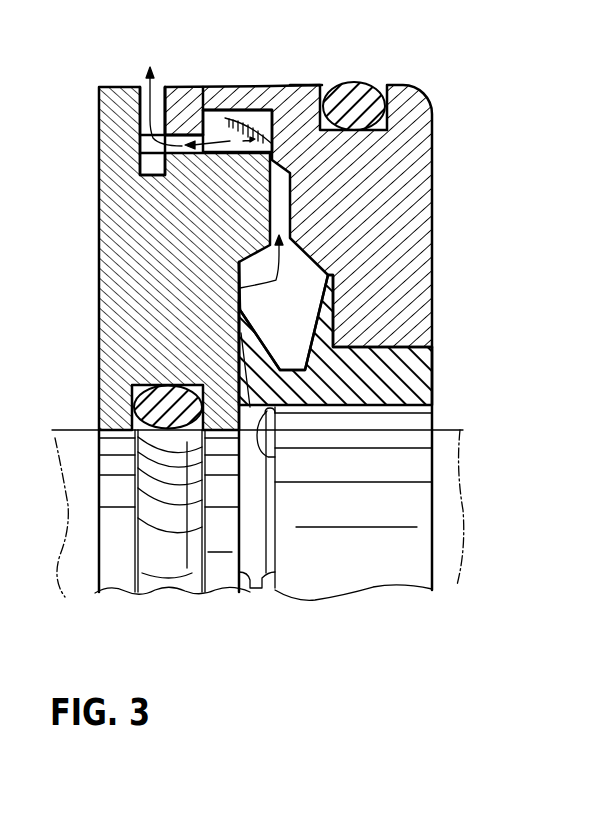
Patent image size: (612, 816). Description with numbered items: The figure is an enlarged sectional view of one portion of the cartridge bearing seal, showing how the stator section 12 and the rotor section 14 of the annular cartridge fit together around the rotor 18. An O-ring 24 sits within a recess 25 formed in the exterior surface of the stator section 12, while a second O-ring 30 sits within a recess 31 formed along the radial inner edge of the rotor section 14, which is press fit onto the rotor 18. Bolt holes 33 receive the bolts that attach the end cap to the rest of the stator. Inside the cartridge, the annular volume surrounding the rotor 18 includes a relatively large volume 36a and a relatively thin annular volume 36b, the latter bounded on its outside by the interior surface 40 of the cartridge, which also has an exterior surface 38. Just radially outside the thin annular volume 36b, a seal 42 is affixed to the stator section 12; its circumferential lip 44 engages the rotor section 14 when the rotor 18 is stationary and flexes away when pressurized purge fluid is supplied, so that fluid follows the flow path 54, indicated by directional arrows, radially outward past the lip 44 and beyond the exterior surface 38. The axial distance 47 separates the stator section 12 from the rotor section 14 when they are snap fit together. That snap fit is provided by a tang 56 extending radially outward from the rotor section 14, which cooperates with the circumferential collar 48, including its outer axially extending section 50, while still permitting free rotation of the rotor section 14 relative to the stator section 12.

The first section 12 is at (408, 86).
The second section 14 is at (99, 243).
The rotor 18 is at (75, 428).
The O-ring 24 is at (365, 82).
The recess 25 is at (302, 84).
The O-ring 30 is at (132, 387).
The recess 31 is at (138, 553).
The bolt holes 33 is at (187, 121).
The relatively large volume 36a is at (300, 329).
The relatively thin annular volume 36b is at (262, 447).
The exterior surface 38 is at (189, 86).
The interior surface 40 is at (357, 406).
The seal 42 is at (433, 367).
The circumferential lip 44 is at (240, 313).
The axial distance 47 is at (254, 590).
The circumferential collar 48 is at (173, 86).
The outer axially extending section 50 is at (222, 100).
The fluid flow path 54 is at (147, 80).
The tang 56 is at (262, 108).